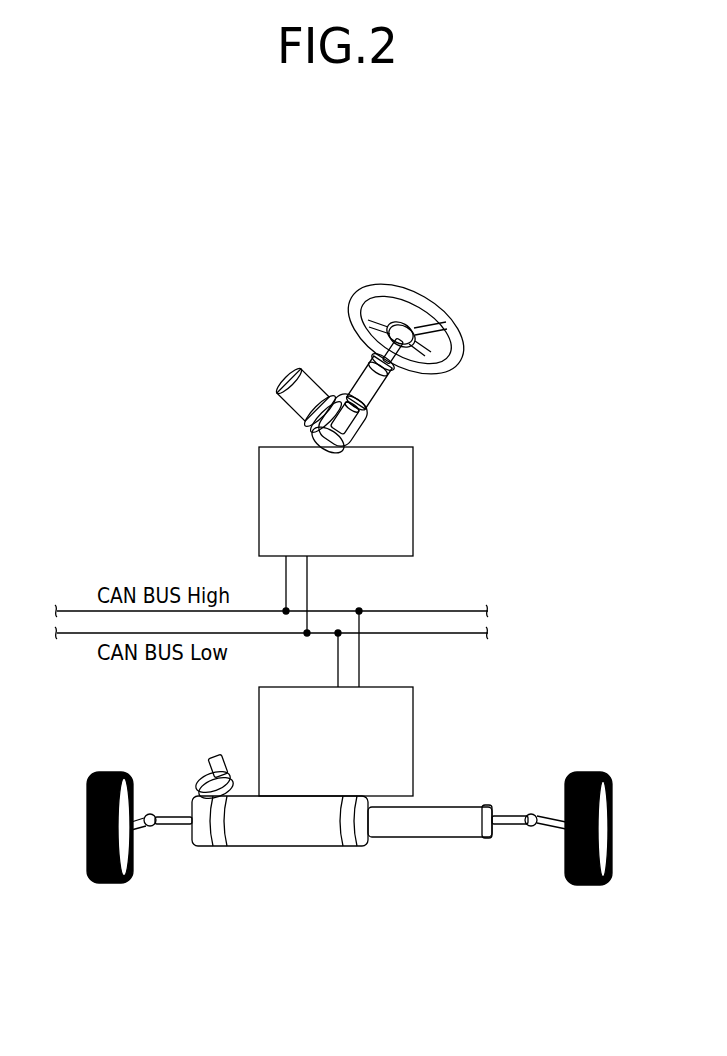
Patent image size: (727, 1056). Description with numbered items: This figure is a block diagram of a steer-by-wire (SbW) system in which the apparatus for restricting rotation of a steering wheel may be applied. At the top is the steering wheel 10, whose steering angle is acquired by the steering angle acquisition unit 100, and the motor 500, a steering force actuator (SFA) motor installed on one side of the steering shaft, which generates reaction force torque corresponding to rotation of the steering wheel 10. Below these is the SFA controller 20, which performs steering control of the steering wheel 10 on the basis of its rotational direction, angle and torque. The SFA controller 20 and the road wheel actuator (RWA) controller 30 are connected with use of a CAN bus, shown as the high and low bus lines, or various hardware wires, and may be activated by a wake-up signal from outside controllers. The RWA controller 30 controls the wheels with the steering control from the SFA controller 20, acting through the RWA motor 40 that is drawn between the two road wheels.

The steering wheel 10 is at (427, 302).
The steering angle acquisition unit 100 is at (350, 412).
The motor 500 is at (288, 372).
The SFA controller 20 is at (411, 446).
The road wheel actuator (RWA) controller 30 is at (403, 687).
The RWA motor 40 is at (268, 848).